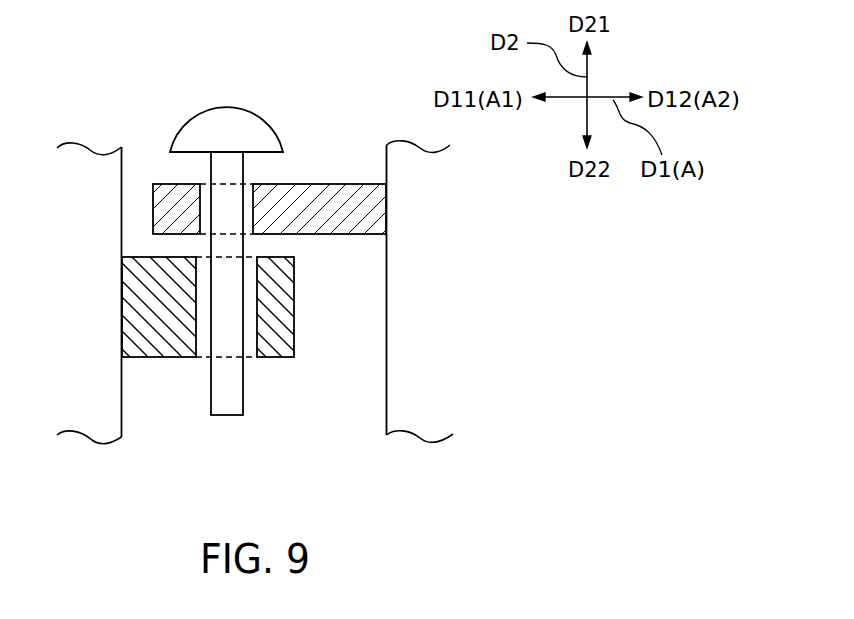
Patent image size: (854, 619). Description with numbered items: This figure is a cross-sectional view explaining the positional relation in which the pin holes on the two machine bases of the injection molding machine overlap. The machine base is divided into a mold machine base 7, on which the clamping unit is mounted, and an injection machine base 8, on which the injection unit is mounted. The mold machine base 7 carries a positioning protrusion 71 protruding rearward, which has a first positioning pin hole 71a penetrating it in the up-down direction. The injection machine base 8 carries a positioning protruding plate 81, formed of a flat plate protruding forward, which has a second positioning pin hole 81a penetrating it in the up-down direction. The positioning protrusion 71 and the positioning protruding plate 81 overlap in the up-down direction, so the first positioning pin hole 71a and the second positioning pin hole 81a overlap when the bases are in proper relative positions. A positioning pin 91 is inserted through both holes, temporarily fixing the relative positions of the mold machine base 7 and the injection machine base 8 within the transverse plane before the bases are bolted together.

The mold machine base 7 is at (122, 415).
The injection machine base 8 is at (385, 415).
The positioning protrusion 71 is at (294, 337).
The first positioning pin hole 71a is at (196, 357).
The positioning protruding plate 81 is at (355, 184).
The second positioning pin hole 81a is at (254, 184).
The positioning pin 91 is at (213, 108).